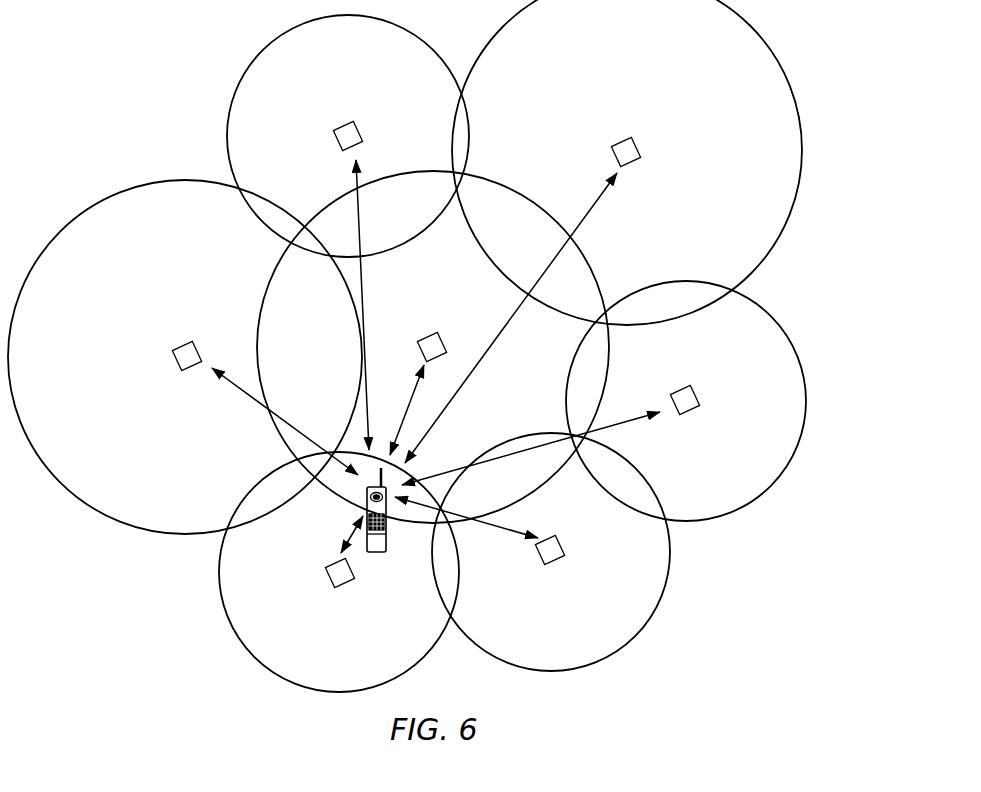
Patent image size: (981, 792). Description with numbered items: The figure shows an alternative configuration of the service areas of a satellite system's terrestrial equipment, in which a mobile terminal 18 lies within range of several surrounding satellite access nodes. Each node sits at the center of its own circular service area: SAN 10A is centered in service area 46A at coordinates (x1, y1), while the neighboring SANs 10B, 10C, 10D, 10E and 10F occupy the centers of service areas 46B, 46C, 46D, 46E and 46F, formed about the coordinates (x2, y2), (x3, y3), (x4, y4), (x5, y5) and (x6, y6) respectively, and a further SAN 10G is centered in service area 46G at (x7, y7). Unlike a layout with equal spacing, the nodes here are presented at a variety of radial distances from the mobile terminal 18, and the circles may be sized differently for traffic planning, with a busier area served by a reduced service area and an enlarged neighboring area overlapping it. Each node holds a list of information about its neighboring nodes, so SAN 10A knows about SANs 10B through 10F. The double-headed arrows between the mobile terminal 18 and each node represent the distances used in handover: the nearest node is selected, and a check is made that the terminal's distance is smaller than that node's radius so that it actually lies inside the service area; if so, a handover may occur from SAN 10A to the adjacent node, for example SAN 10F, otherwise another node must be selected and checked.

The satellite access node 10A is at (418, 355).
The satellite access node 10B is at (697, 393).
The satellite access node 10C is at (634, 142).
The satellite access node 10D is at (362, 134).
The satellite access node 10E is at (172, 350).
The satellite access node 10F is at (354, 568).
The satellite access node 10G is at (563, 545).
The mobile terminal 18 is at (386, 535).
The service area 46A is at (280, 433).
The service area 46B is at (787, 472).
The service area 46C is at (788, 222).
The service area 46D is at (233, 98).
The service area 46E is at (118, 520).
The service area 46F is at (220, 598).
The service area 46G is at (620, 650).